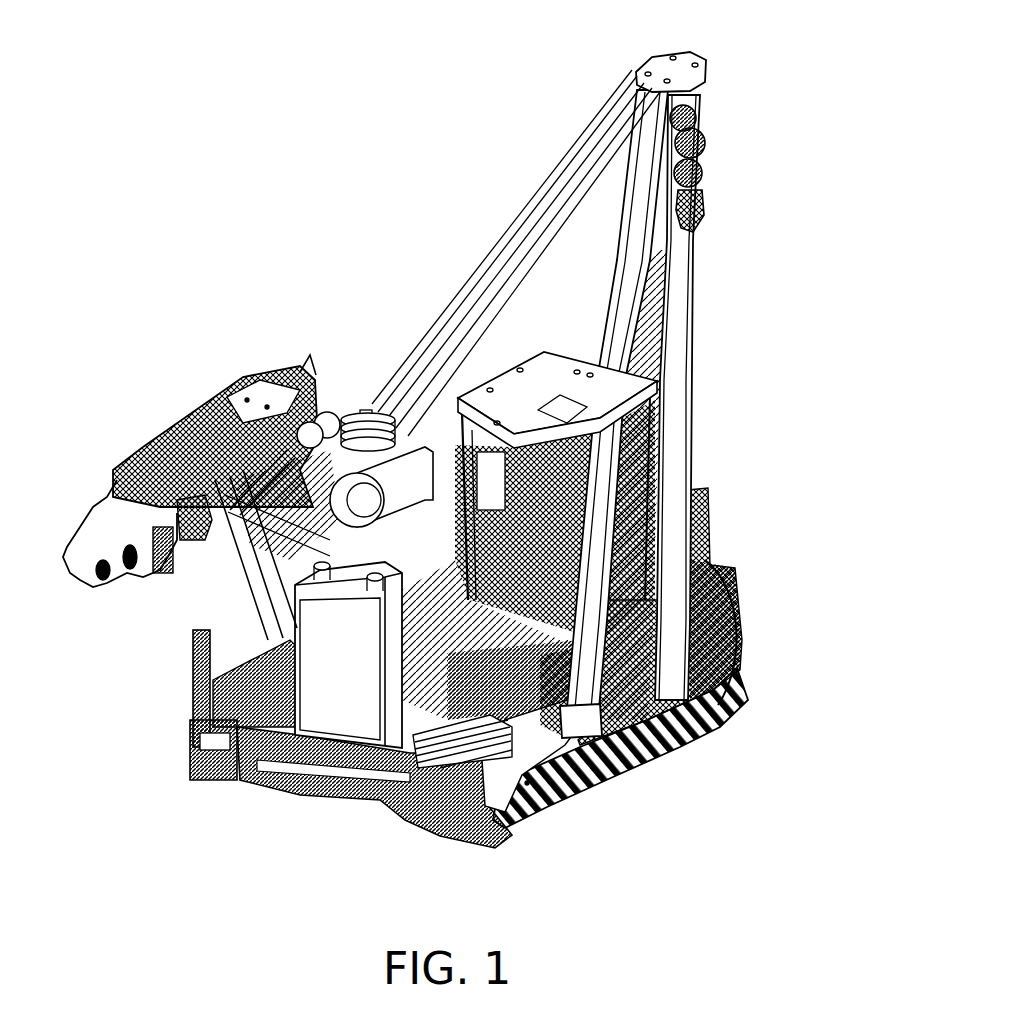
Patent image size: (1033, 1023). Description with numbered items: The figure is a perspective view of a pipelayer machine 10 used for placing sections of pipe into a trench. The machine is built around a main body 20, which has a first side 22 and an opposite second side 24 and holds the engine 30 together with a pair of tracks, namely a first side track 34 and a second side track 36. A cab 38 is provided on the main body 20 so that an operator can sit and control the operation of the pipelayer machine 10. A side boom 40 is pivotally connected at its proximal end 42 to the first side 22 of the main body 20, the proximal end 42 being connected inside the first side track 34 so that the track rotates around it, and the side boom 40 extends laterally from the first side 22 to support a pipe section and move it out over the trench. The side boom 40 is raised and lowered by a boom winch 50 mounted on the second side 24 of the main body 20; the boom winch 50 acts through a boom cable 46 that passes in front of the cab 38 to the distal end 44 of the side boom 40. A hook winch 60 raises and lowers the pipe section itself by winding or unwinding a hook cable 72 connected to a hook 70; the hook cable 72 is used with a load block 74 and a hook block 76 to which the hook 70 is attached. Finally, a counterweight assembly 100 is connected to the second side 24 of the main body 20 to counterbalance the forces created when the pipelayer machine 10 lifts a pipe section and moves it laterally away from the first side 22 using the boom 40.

The pipelayer machine 10 is at (735, 362).
The counterweight assembly 100 is at (240, 340).
The main body 20 is at (408, 758).
The first side 22 is at (497, 768).
The second side 24 is at (257, 650).
The engine 30 is at (333, 712).
The first side track 34 is at (660, 763).
The second side track 36 is at (247, 787).
The cab 38 is at (570, 403).
The side boom 40 is at (680, 423).
The proximal end 42 is at (707, 717).
The distal end 44 is at (683, 62).
The boom cable 46 is at (547, 188).
The boom winch 50 is at (355, 497).
The hook winch 60 is at (475, 665).
The hook 70 is at (700, 223).
The hook cable 72 is at (703, 117).
The load block 74 is at (712, 140).
The hook block 76 is at (707, 172).